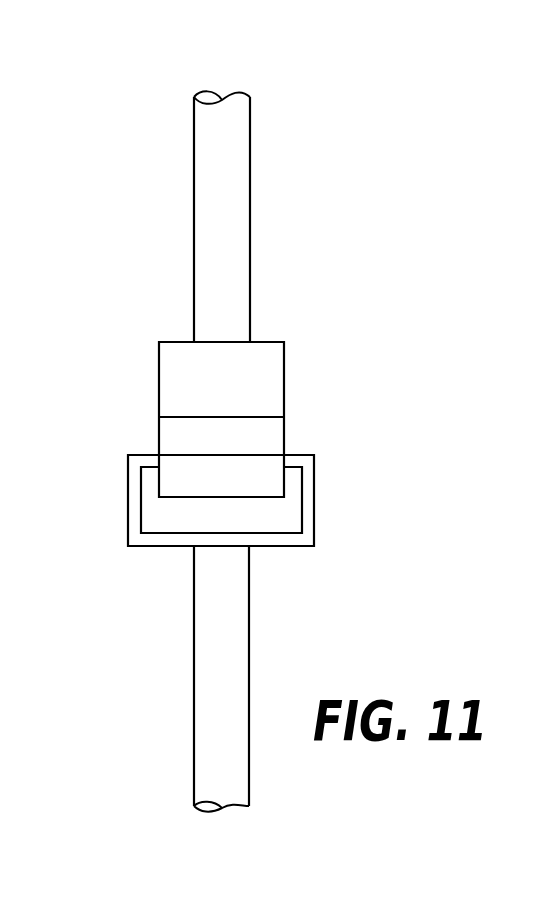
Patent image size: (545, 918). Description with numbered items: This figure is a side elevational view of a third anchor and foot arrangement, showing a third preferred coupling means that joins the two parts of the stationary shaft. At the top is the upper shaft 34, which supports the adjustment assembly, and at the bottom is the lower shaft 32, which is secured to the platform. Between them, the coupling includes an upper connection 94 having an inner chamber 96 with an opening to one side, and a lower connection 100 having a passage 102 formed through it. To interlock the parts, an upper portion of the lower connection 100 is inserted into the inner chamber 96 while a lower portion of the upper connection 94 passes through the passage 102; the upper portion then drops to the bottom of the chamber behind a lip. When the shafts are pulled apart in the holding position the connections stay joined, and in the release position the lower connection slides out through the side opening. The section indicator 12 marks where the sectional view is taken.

The section line indicator (FIG. 12) 12 is at (225, 85).
The lower shaft 32 is at (193, 640).
The upper shaft 34 is at (252, 166).
The upper connection 94 is at (258, 386).
The inner chamber 96 is at (258, 434).
The lower connection 100 is at (315, 505).
The passage 102 is at (163, 517).